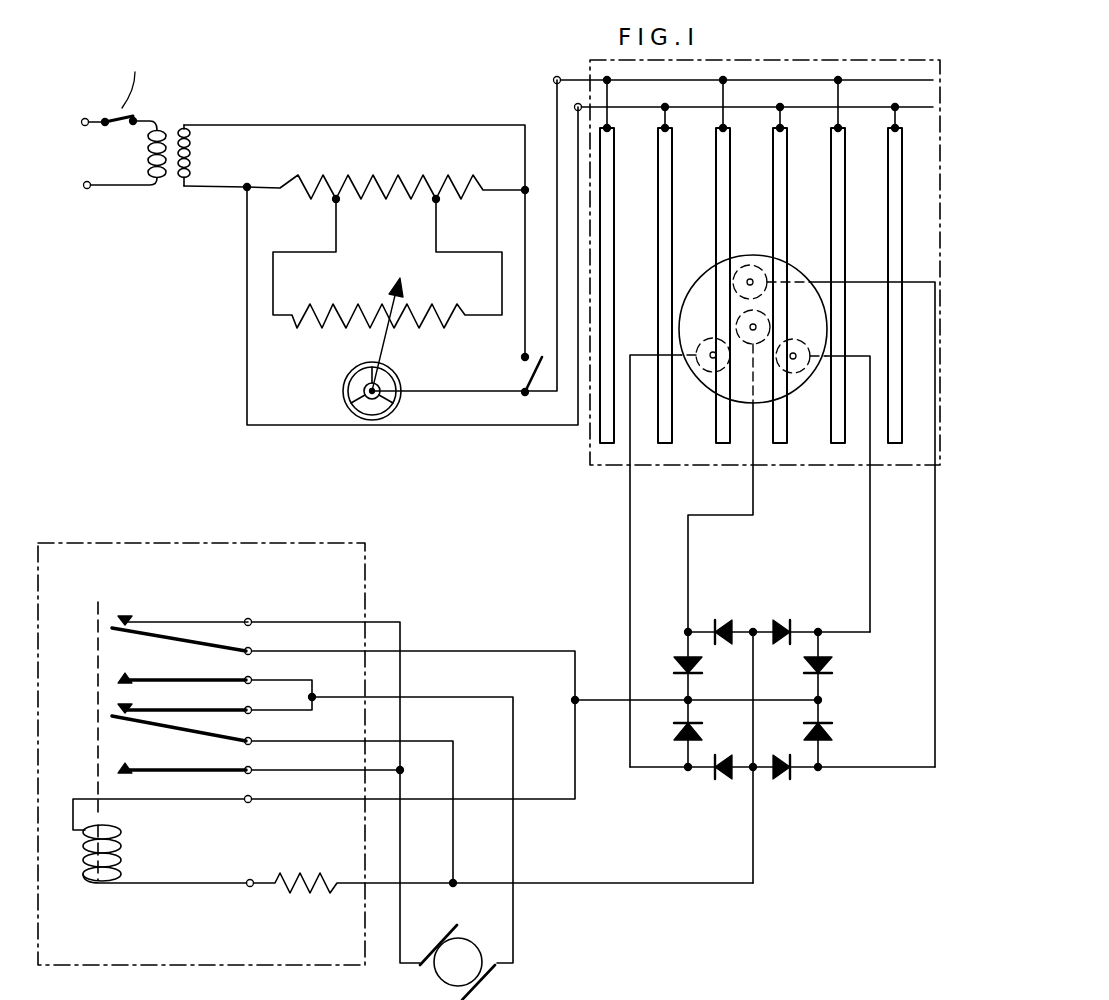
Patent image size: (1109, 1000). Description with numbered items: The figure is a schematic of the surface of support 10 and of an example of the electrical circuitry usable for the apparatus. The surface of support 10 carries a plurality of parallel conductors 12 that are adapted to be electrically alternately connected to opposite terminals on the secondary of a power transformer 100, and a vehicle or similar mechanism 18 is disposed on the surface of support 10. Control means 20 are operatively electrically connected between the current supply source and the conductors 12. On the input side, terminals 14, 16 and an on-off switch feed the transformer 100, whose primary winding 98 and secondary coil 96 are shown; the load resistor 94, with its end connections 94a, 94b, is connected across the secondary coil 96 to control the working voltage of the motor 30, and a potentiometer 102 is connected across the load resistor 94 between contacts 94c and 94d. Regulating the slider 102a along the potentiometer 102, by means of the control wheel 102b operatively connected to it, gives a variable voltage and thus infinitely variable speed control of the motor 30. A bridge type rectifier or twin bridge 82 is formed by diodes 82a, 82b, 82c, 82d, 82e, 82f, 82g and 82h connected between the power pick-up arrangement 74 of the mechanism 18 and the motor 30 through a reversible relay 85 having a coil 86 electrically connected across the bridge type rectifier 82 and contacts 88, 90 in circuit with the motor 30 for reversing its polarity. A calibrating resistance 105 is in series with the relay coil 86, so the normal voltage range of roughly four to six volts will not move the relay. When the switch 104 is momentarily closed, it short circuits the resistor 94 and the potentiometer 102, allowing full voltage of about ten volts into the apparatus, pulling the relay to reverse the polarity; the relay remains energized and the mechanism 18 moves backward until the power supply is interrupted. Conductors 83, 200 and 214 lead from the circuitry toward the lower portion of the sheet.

The surface of support 10 is at (888, 58).
The parallel conductors 12 is at (723, 228).
The power input terminal 14 is at (84, 118).
The power input terminal 16 is at (85, 189).
The vehicle mechanism 18 is at (753, 316).
The control means 20 is at (381, 281).
The motor 30 is at (471, 943).
The power pick-up arrangement 74 is at (724, 303).
The bridge type rectifier 82 is at (754, 728).
The diode 82a is at (700, 628).
The diode 82b is at (797, 625).
The diode 82c is at (832, 656).
The diode 82d is at (832, 721).
The diode 82e is at (795, 778).
The diode 82f is at (715, 776).
The diode 82g is at (672, 722).
The diode 82h is at (672, 655).
The conductor 83 is at (598, 999).
The relay assembly 85 is at (395, 754).
The relay coil 86 is at (112, 871).
The relay contacts 88 is at (112, 649).
The relay contacts 90 is at (118, 741).
The load resistor 94 is at (430, 179).
The resistor terminal 94a is at (245, 191).
The resistor terminal 94b is at (522, 193).
The contact 94c is at (334, 202).
The contact 94d is at (434, 203).
The secondary coil 96 is at (192, 151).
The transformer primary winding 98 is at (148, 153).
The power transformer 100 is at (181, 145).
The potentiometer 102 is at (330, 344).
The slider 102a is at (400, 290).
The control wheel 102b is at (372, 420).
The switch 104 is at (520, 383).
The calibrating resistance 105 is at (292, 876).
The conductor 200 is at (695, 992).
The conductor 214 is at (925, 999).